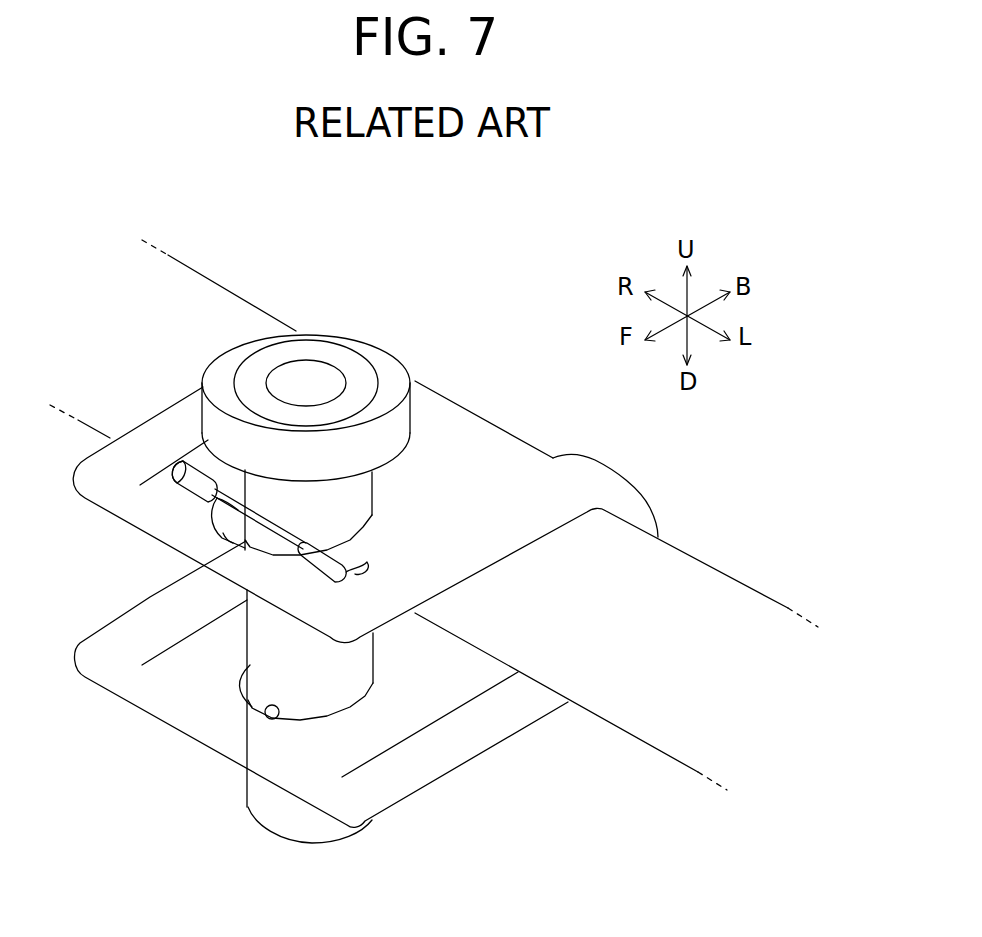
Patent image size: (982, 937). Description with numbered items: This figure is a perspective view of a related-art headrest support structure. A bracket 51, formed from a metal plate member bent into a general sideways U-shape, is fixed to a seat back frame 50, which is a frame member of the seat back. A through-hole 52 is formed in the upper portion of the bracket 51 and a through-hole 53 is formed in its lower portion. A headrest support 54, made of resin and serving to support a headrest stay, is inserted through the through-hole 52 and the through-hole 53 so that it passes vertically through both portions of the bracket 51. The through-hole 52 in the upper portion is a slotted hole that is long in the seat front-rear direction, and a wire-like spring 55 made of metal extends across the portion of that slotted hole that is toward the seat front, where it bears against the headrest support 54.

The seat back frame 50 is at (237, 313).
The bracket 51 is at (115, 468).
The through-hole 52 is at (210, 534).
The through-hole 53 is at (265, 715).
The headrest support 54 is at (272, 648).
The wire-like spring 55 is at (215, 505).